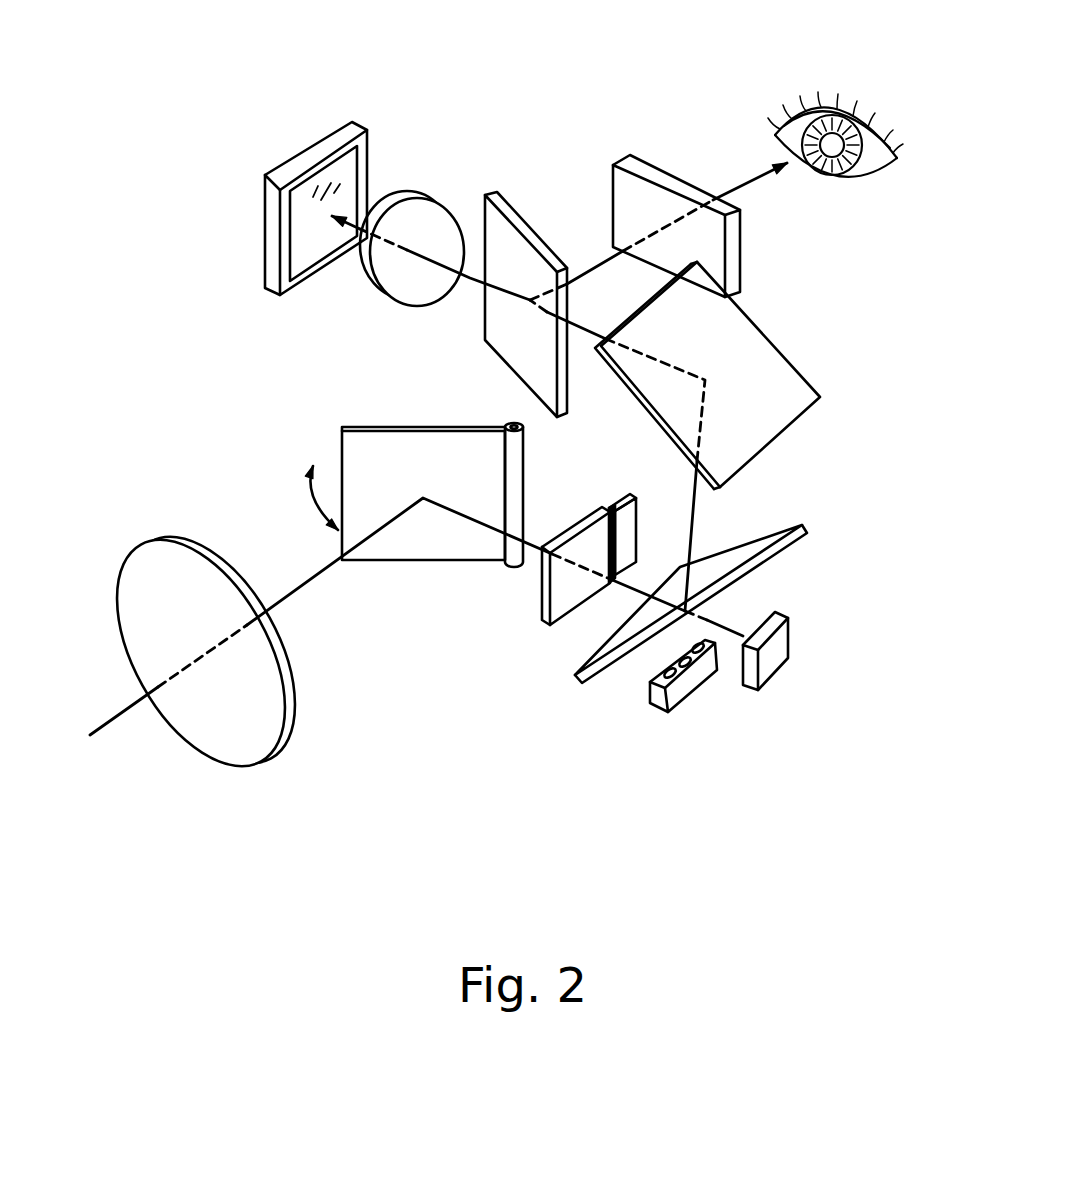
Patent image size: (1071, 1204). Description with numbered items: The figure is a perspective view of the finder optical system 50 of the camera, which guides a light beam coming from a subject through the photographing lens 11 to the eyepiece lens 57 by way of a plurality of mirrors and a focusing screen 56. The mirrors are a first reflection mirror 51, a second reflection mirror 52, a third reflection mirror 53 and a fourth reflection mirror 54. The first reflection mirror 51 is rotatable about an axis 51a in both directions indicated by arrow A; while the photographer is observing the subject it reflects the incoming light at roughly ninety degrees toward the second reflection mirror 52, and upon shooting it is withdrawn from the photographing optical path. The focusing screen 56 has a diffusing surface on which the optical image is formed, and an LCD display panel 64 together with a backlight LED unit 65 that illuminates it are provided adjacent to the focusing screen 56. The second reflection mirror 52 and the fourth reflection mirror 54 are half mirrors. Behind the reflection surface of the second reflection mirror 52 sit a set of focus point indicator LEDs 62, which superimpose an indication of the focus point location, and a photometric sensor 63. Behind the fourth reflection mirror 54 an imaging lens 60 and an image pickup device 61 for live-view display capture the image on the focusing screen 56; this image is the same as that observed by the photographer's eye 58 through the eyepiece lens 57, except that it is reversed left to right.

The photographing lens 11 is at (227, 760).
The finder optical system 50 is at (145, 335).
The first reflection mirror 51 is at (367, 435).
The axis 51a is at (510, 423).
The second reflection mirror 52 is at (793, 555).
The third reflection mirror 53 is at (778, 350).
The fourth reflection mirror 54 is at (517, 207).
The focusing screen 56 is at (543, 623).
The eyepiece lens 57 is at (663, 168).
The photographer's eye 58 is at (870, 112).
The imaging lens 60 is at (408, 195).
The image pickup device 61 is at (300, 157).
The set of focus point indicator LEDs 62 is at (695, 690).
The photometric sensor 63 is at (795, 638).
The LCD display panel 64 is at (636, 535).
The backlight LED unit 65 is at (614, 504).